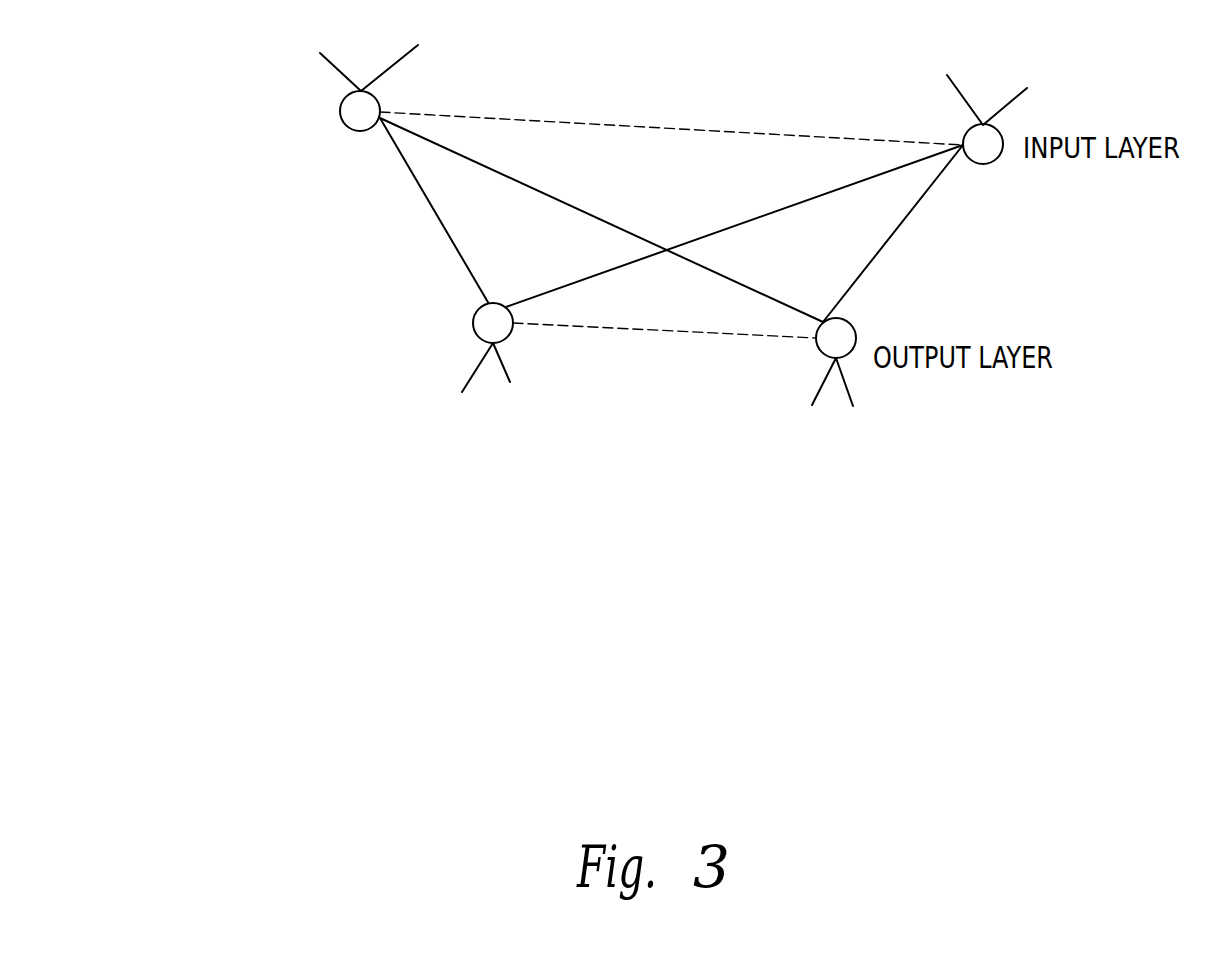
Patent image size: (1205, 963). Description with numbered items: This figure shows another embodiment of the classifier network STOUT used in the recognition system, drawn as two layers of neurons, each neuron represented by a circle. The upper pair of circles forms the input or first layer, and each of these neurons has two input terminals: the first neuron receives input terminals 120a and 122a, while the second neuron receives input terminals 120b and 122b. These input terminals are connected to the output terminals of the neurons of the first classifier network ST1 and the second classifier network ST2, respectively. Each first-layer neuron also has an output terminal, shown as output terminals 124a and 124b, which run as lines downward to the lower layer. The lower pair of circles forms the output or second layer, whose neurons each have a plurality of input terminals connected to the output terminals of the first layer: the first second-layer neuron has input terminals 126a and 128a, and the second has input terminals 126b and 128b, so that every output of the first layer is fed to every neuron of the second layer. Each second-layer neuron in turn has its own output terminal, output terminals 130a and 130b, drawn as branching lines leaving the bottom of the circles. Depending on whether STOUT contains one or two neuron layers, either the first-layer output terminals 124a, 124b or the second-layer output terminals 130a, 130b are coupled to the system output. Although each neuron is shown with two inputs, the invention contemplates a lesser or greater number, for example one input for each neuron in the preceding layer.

The input terminal 120a is at (375, 78).
The input terminal 120b is at (977, 95).
The input terminal 122a is at (400, 60).
The input terminal 122b is at (1007, 105).
The output terminal 124a is at (409, 169).
The output terminal 124b is at (912, 205).
The input terminal 126a is at (456, 248).
The input terminal 126b is at (783, 303).
The input terminal 128a is at (525, 298).
The input terminal 128b is at (847, 295).
The output terminal 130a is at (502, 363).
The output terminal 130b is at (845, 382).